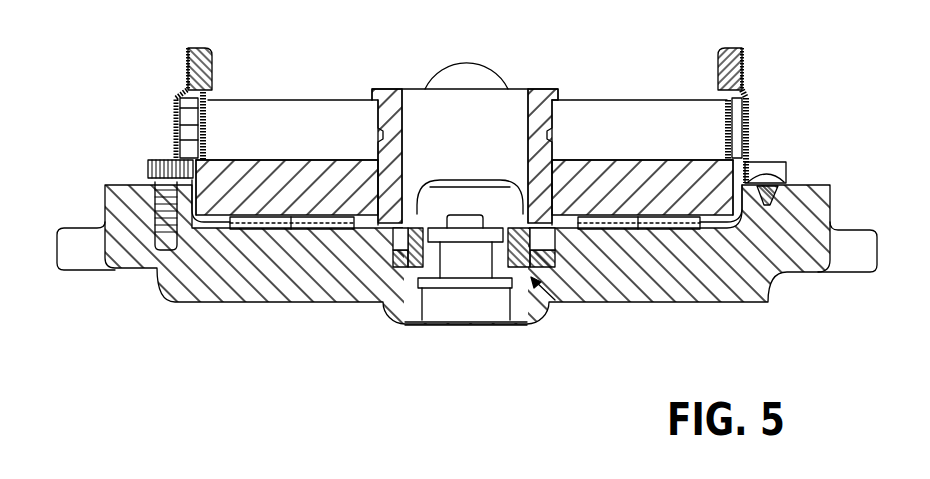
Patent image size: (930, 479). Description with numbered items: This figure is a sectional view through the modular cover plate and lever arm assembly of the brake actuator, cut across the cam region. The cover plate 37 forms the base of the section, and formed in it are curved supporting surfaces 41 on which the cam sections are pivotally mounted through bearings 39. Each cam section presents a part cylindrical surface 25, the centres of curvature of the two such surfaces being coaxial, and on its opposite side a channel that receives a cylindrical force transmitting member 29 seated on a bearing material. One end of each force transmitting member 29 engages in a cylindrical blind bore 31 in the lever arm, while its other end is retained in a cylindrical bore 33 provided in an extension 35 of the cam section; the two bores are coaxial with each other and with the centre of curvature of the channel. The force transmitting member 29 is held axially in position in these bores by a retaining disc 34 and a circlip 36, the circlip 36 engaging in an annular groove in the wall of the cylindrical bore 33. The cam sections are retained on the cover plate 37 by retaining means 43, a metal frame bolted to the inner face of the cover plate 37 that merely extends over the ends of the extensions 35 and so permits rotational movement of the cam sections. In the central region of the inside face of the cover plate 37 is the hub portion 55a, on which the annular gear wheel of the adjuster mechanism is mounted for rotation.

The part cylindrical surface 25 is at (356, 232).
The cylindrical force transmitting member 29 is at (295, 114).
The cylindrical blind bore 31 is at (377, 112).
The cylindrical bore 33 is at (208, 100).
The retaining disc 34 is at (723, 133).
The extension 35 is at (187, 63).
The circlip 36 is at (744, 112).
The cover plate 37 is at (208, 304).
The bearings 39 is at (272, 232).
The curved supporting surfaces 41 is at (648, 302).
The retaining means 43 is at (173, 113).
The hub portion 55a is at (427, 192).